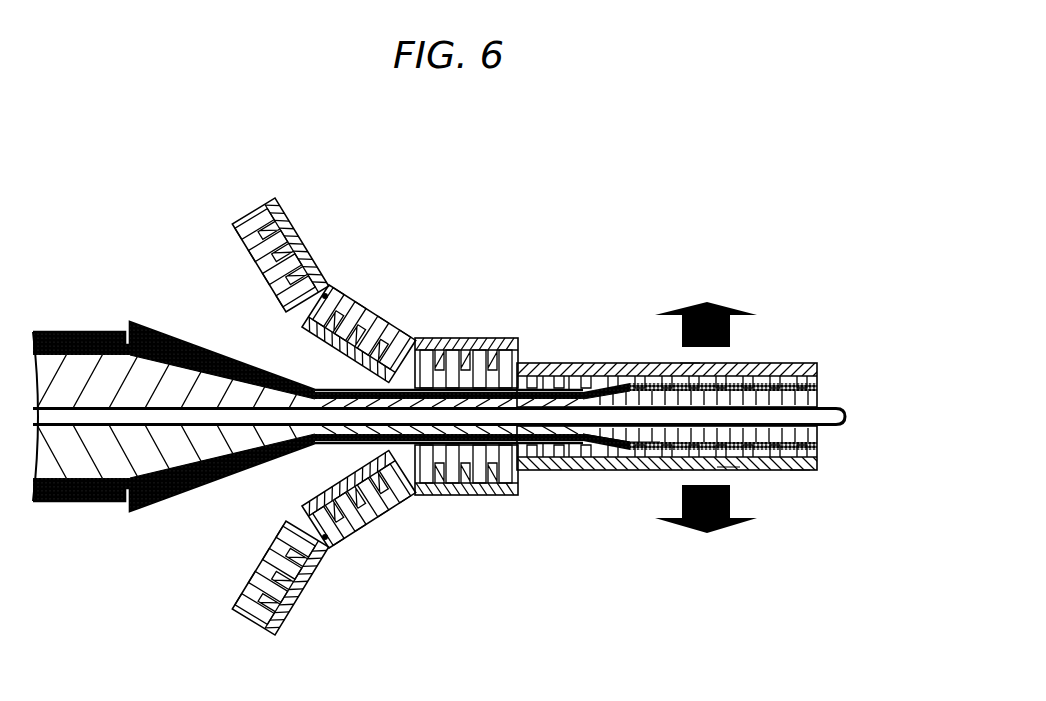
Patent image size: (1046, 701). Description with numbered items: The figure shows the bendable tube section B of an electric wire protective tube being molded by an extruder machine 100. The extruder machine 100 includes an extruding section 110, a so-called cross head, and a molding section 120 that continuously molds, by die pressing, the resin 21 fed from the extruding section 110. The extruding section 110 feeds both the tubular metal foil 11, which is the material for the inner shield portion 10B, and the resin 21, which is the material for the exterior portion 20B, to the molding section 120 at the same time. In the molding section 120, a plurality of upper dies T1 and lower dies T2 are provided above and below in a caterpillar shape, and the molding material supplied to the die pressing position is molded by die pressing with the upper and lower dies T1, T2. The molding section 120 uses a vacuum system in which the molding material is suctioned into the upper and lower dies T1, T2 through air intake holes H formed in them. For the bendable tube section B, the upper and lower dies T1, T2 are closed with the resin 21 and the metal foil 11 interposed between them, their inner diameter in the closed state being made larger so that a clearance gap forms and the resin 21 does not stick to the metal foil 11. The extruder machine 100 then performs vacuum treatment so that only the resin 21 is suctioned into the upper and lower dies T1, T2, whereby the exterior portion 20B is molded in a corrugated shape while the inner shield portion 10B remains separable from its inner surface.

The extruder machine 100 is at (120, 96).
The extruding section 110 is at (208, 337).
The molding section 120 is at (517, 322).
The upper dies T1 is at (310, 240).
The lower dies T2 is at (308, 592).
The inner shield portion 10B is at (823, 397).
The exterior portion 20B is at (782, 363).
The metal foil 11 is at (590, 440).
The resin 21 is at (640, 463).
The air intake holes H is at (690, 363).
The bendable tube section B is at (727, 467).